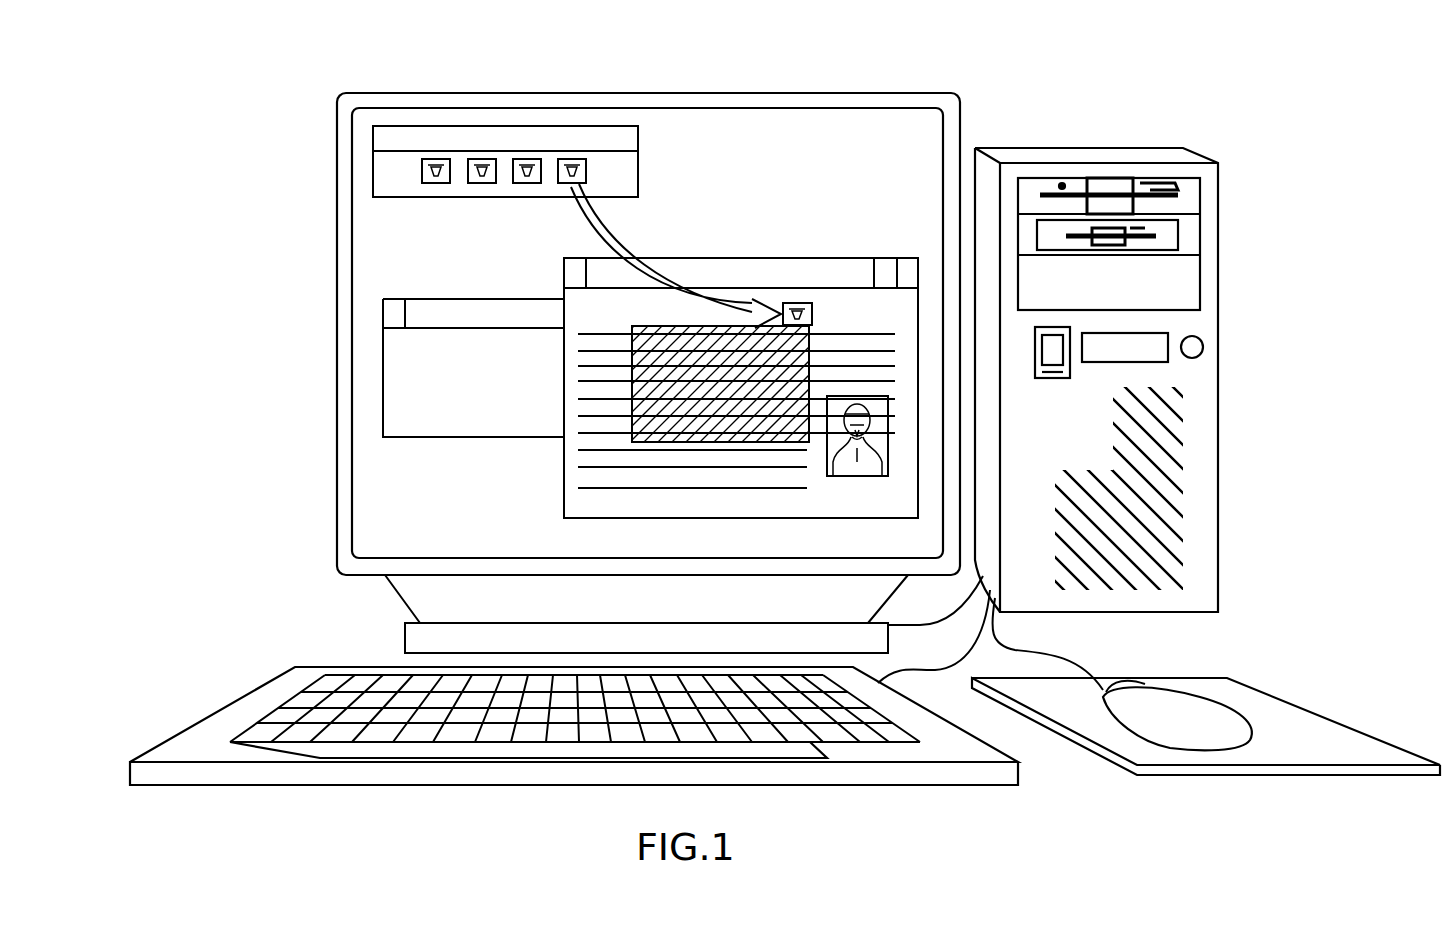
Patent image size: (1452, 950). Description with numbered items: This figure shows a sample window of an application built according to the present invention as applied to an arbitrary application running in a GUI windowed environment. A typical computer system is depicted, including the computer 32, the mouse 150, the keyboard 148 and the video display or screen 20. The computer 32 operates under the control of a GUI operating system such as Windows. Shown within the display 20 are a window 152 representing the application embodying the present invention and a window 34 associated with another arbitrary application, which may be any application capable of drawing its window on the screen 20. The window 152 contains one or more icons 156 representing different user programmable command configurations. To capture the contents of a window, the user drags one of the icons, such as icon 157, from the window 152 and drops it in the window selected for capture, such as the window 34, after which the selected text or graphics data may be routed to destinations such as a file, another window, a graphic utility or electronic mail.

The video display 20 is at (385, 510).
The computer 32 is at (1210, 322).
The window 34 is at (847, 302).
The keyboard 148 is at (262, 703).
The mouse 150 is at (1212, 708).
The window 152 is at (640, 172).
The icons 156 is at (560, 183).
The icon 157 is at (797, 303).